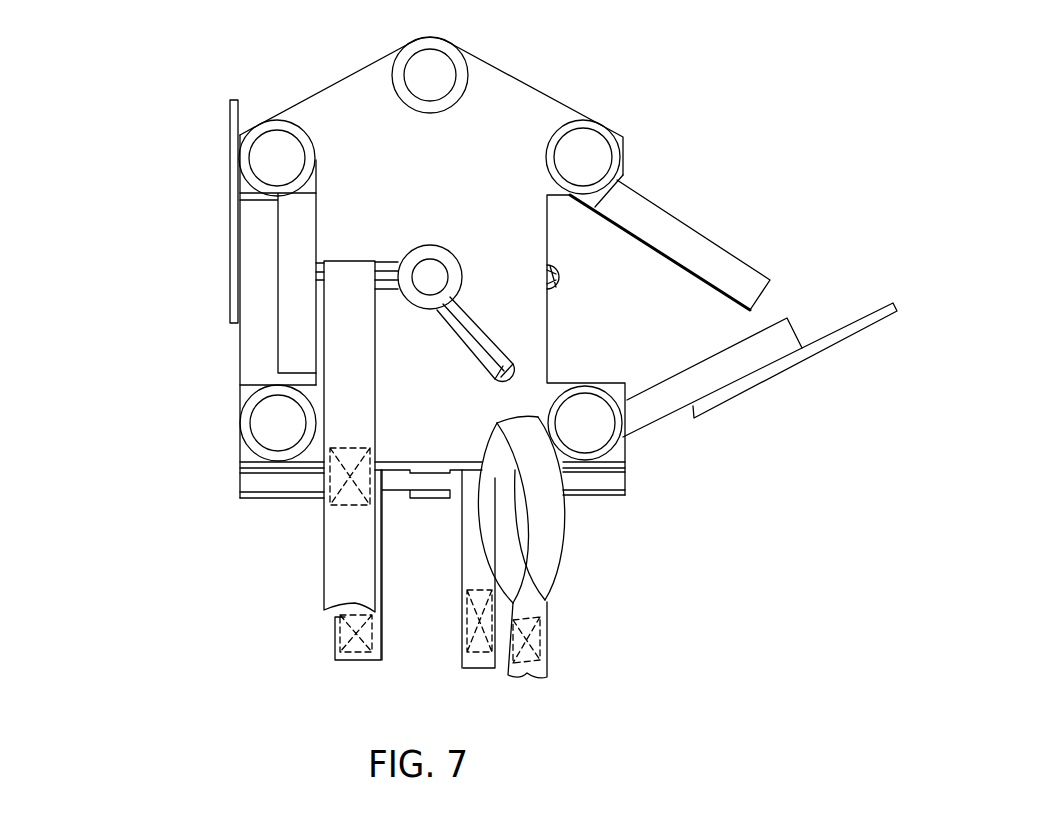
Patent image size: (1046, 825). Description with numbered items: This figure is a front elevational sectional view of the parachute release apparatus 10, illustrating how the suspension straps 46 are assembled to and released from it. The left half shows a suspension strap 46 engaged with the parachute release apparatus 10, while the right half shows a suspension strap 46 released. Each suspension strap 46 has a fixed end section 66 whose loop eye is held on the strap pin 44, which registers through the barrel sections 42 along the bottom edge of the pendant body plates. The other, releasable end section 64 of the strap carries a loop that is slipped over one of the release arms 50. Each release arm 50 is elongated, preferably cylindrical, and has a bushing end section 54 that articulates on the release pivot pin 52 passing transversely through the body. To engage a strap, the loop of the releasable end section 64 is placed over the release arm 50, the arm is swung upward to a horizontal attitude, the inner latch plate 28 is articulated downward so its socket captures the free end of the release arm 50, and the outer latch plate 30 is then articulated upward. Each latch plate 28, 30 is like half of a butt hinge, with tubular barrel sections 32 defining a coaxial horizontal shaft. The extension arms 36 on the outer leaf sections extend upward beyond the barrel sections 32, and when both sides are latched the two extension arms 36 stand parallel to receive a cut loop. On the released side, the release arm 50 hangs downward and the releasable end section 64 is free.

The parachute release apparatus 10 is at (313, 82).
The inner latch plate 28 is at (665, 240).
The outer latch plate 30 is at (680, 398).
The barrel section 32 is at (617, 153).
The extension arm 36 is at (797, 363).
The barrel section 42 is at (258, 497).
The strap pin 44 is at (277, 483).
The suspension strap 46 is at (348, 572).
The release arm 50 is at (473, 337).
The release pivot pin 52 is at (423, 283).
The bushing end section 54 is at (415, 260).
The releasable end section 64 is at (540, 492).
The fixed end section 66 is at (470, 503).